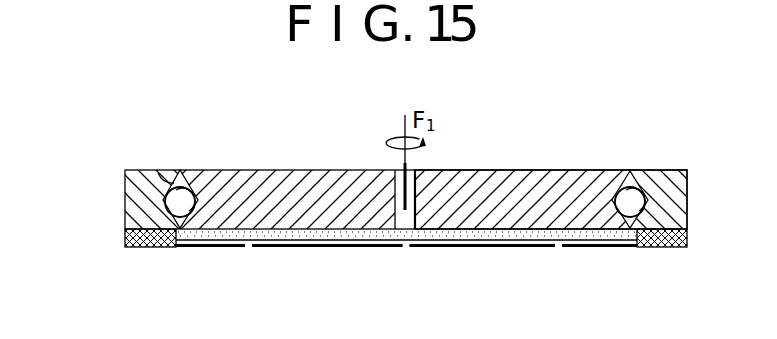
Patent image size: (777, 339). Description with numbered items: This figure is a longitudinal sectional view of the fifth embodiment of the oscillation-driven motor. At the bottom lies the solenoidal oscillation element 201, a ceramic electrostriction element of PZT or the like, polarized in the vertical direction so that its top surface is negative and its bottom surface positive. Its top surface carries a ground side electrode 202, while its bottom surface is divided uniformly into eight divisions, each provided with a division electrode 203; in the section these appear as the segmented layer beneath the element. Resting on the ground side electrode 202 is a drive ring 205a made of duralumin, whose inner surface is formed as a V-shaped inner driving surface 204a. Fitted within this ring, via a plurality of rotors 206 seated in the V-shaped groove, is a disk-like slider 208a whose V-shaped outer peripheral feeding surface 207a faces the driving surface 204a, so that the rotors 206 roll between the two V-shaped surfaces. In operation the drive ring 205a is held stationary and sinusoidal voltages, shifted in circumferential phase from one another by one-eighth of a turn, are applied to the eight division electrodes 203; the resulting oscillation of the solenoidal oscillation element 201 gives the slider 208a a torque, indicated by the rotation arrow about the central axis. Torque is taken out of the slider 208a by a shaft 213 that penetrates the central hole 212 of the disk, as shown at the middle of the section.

The solenoidal oscillation element 201 is at (157, 258).
The ground side electrode 202 is at (269, 247).
The division electrodes 203 is at (427, 247).
The V-shaped inner driving surface 204a is at (158, 178).
The drive ring 205a is at (133, 203).
The rotors 206 is at (184, 190).
The V-shaped outer peripheral feeding surface 207a is at (190, 200).
The disk-like slider 208a is at (522, 180).
The central hole 212 is at (415, 170).
The shaft 213 is at (403, 163).